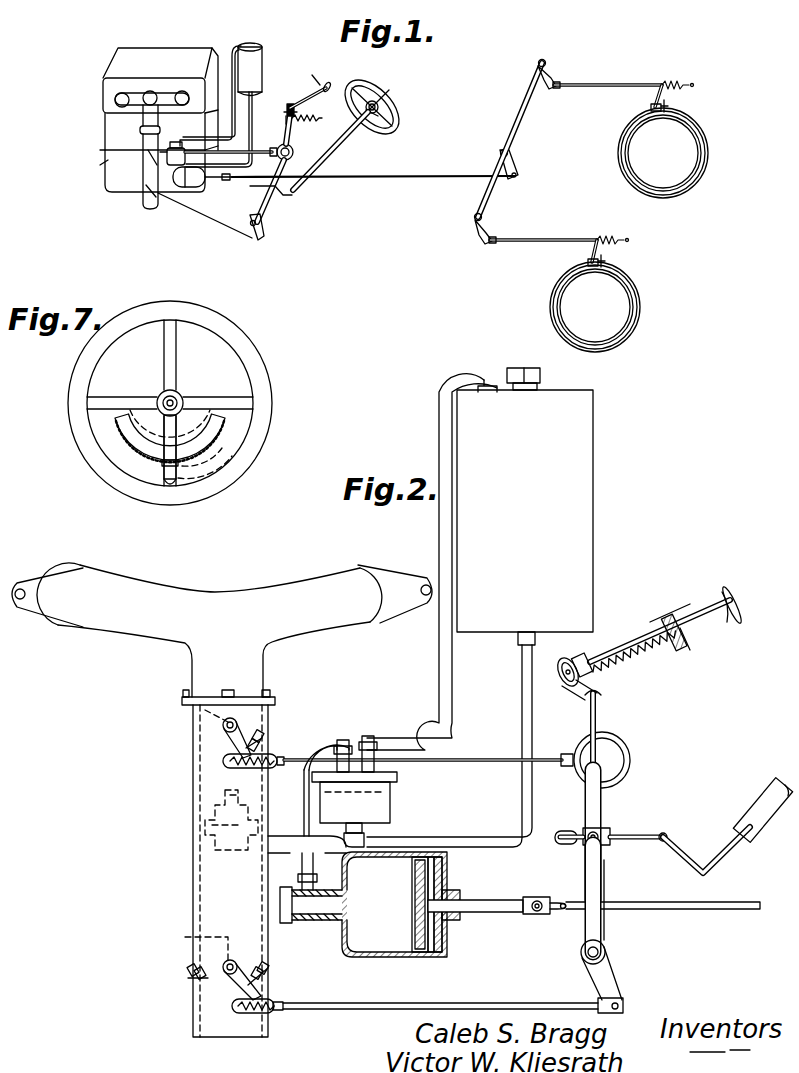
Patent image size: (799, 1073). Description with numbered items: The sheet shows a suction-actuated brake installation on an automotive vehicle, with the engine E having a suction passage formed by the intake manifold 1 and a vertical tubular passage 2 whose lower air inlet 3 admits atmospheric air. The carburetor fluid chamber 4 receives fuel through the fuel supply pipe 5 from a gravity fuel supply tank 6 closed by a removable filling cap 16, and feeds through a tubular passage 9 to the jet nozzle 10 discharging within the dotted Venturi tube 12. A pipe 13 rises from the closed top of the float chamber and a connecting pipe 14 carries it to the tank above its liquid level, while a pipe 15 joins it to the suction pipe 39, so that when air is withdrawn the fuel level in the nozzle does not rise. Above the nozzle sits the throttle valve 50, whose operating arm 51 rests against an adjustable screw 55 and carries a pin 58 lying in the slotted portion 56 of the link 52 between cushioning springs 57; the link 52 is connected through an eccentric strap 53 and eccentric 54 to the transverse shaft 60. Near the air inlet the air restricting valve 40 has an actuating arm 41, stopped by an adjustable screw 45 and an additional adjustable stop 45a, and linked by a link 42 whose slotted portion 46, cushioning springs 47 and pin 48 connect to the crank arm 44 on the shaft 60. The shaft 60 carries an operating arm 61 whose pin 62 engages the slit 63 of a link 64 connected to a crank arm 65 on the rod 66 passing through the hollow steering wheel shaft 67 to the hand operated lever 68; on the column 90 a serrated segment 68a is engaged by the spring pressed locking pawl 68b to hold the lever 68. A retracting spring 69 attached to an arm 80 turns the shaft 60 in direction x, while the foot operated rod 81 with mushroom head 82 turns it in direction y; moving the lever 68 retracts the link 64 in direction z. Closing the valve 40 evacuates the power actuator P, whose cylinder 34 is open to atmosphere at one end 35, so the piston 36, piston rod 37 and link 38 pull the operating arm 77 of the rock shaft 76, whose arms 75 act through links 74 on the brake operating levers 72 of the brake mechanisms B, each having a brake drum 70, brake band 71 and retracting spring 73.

In FIG. 1, the intake manifold 1 is at (122, 102).
In FIG. 2, the intake manifold 1 is at (210, 595).
In FIG. 1, the vertically disposed tubular passage 2 is at (132, 155).
In FIG. 2, the vertically disposed tubular passage 2 is at (193, 887).
In FIG. 1, the air inlet 3 is at (152, 200).
In FIG. 2, the air inlet 3 is at (234, 1038).
In FIG. 1, the fluid chamber 4 is at (178, 146).
In FIG. 2, the fluid chamber 4 is at (380, 807).
In FIG. 1, the fuel supply pipe 5 is at (252, 118).
In FIG. 2, the fuel supply pipe 5 is at (522, 790).
In FIG. 1, the fuel supply tank 6 is at (262, 72).
In FIG. 2, the fuel supply tank 6 is at (590, 507).
In FIG. 2, the tubular passage 9 is at (290, 826).
In FIG. 2, the jet nozzle 10 is at (214, 807).
In FIG. 2, the Venturi tube 12 is at (199, 781).
In FIG. 2, the pipe 13 is at (372, 744).
In FIG. 1, the pipe to tank 14 is at (231, 52).
In FIG. 2, the pipe to tank 14 is at (438, 525).
In FIG. 2, the pipe 15 is at (303, 786).
In FIG. 2, the removable filling cap 16 is at (517, 368).
In FIG. 2, the cylinder 34 is at (372, 958).
In FIG. 2, the open end 35 is at (446, 869).
In FIG. 2, the piston 36 is at (428, 932).
In FIG. 2, the piston rod 37 is at (498, 902).
In FIG. 1, the link 38 is at (396, 180).
In FIG. 2, the link 38 is at (705, 910).
In FIG. 2, the suction pipe 39 is at (310, 920).
In FIG. 2, the air restricting valve 40 is at (187, 937).
In FIG. 2, the actuating arm 41 is at (242, 985).
In FIG. 2, the link 42 is at (462, 997).
In FIG. 2, the crank arm 44 is at (610, 977).
In FIG. 2, the adjustable screw 45 is at (270, 975).
In FIG. 2, the adjustable stop 45a is at (190, 977).
In FIG. 2, the slotted portion 46 is at (240, 1008).
In FIG. 2, the cushioning springs 47 is at (260, 1012).
In FIG. 2, the pin 48 is at (262, 1000).
In FIG. 2, the throttle valve 50 is at (200, 722).
In FIG. 2, the operating arm 51 is at (232, 738).
In FIG. 2, the link 52 is at (493, 759).
In FIG. 2, the eccentric strap 53 is at (631, 762).
In FIG. 1, the eccentric 54 is at (291, 153).
In FIG. 2, the eccentric 54 is at (616, 752).
In FIG. 2, the adjustable screw 55 is at (266, 733).
In FIG. 2, the slotted portion 56 is at (225, 762).
In FIG. 2, the cushioning springs 57 is at (258, 766).
In FIG. 2, the pin 58 is at (260, 763).
In FIG. 1, the shaft 60 is at (312, 88).
In FIG. 2, the shaft 60 is at (600, 801).
In FIG. 2, the operating arm 61 is at (606, 868).
In FIG. 2, the pin 62 is at (590, 845).
In FIG. 2, the slit 63 is at (560, 832).
In FIG. 2, the link 64 is at (640, 836).
In FIG. 2, the crank arm 65 is at (688, 850).
In FIG. 1, the rod 66 is at (293, 196).
In FIG. 2, the rod 66 is at (746, 860).
In FIG. 1, the hollow steering wheel shaft 67 is at (329, 156).
In FIG. 1, the hand operated lever 68 is at (380, 109).
In FIG. 7, the hand operated lever 68 is at (170, 455).
In FIG. 7, the segment 68a is at (125, 441).
In FIG. 7, the spring pressed locking pawl 68b is at (212, 488).
In FIG. 1, the retracting spring 69 is at (310, 122).
In FIG. 2, the retracting spring 69 is at (636, 675).
In FIG. 1, the brake drum 70 is at (632, 165).
In FIG. 1, the brake band 71 is at (628, 134).
In FIG. 1, the brake operating lever 72 is at (655, 98).
In FIG. 1, the retracting spring 73 is at (686, 82).
In FIG. 1, the link 74 is at (618, 84).
In FIG. 1, the arms 75 is at (549, 76).
In FIG. 1, the rock shaft 76 is at (487, 202).
In FIG. 1, the operating arm 77 is at (513, 160).
In FIG. 1, the arm 80 is at (288, 118).
In FIG. 2, the arm 80 is at (574, 695).
In FIG. 1, the foot operated rod 81 is at (315, 83).
In FIG. 2, the foot operated rod 81 is at (648, 635).
In FIG. 2, the mushroom head 82 is at (740, 596).
In FIG. 1, the column 90 is at (395, 125).
In FIG. 7, the column 90 is at (266, 388).
In FIG. 1, the internal combustion engine E is at (108, 72).
In FIG. 1, the power actuator P is at (202, 192).
In FIG. 2, the power actuator P is at (398, 971).
In FIG. 1, the brake mechanism B is at (672, 192).
In FIG. 2, the arrow X x is at (610, 730).
In FIG. 2, the arrow Y y is at (610, 812).
In FIG. 2, the arrow Z z is at (620, 845).